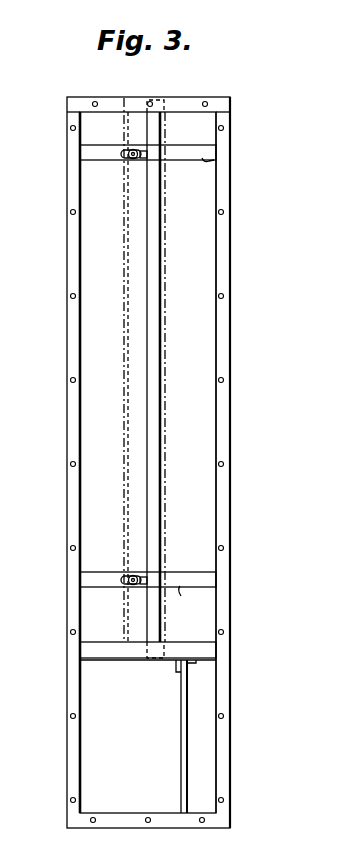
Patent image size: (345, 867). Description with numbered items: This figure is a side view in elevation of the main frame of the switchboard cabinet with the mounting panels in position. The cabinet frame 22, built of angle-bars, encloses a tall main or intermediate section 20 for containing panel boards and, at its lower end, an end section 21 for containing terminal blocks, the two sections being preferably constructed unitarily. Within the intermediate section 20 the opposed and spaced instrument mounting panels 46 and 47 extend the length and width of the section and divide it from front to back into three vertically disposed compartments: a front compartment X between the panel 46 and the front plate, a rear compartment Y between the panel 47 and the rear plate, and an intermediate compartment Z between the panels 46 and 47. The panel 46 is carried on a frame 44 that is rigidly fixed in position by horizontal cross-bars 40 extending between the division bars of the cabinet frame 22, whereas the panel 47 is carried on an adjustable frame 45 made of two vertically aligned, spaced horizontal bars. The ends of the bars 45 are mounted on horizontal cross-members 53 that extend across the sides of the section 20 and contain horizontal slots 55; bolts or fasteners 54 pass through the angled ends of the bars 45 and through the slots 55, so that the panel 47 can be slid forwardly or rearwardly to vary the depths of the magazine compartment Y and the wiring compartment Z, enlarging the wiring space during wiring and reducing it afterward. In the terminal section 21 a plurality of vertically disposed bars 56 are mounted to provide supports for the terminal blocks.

The main or intermediate section 20 is at (190, 352).
The end section 21 is at (196, 708).
The frame 22 is at (218, 230).
The horizontal cross-bars 40 is at (204, 650).
The frame 44 is at (159, 472).
The frame 45 is at (136, 157).
The instrument mounting panel 46 is at (163, 342).
The instrument mounting panel 47 is at (126, 338).
The horizontal cross-members 53 is at (214, 160).
The bolts or fasteners 54 is at (128, 152).
The horizontal slots 55 is at (142, 158).
The vertically disposed bars 56 is at (181, 745).
The front compartment X is at (192, 417).
The rear compartment Y is at (100, 482).
The intermediate compartment Z is at (136, 400).